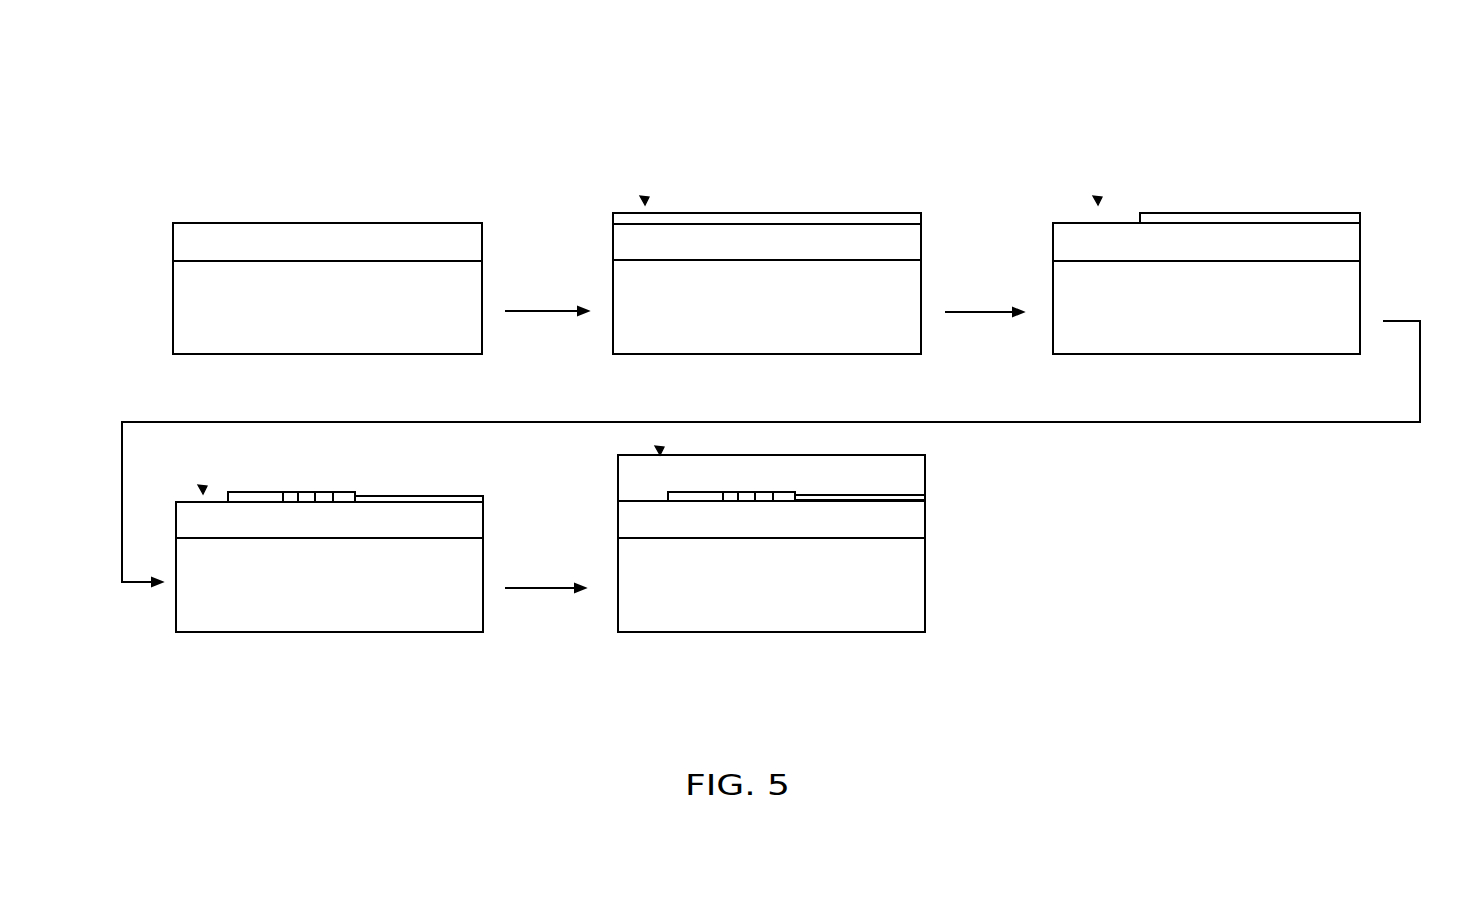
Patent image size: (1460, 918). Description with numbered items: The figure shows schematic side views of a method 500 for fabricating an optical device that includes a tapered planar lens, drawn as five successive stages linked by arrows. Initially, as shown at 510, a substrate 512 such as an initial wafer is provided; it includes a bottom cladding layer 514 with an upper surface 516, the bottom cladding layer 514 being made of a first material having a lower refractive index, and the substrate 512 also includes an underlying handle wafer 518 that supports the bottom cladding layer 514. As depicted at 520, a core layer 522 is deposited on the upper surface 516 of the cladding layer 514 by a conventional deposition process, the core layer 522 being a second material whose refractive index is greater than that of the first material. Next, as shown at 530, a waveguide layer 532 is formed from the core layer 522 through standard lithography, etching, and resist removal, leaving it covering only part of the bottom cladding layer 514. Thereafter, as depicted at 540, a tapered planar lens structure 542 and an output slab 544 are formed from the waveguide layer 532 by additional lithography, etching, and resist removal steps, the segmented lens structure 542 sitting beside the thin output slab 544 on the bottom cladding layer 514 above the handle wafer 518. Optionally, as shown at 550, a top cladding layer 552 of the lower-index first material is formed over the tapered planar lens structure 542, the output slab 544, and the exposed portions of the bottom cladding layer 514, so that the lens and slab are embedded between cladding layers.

The method 500 is at (705, 118).
The initial step 510 is at (203, 202).
The substrate 512 is at (163, 225).
The bottom cladding layer 514 is at (473, 242).
The upper surface 516 is at (400, 222).
The handle wafer 518 is at (473, 342).
The core layer deposition step 520 is at (646, 202).
The core layer 522 is at (797, 212).
The waveguide layer forming step 530 is at (1098, 202).
The waveguide layer 532 is at (1257, 212).
The lens and slab forming step 540 is at (203, 490).
The tapered planar lens structure 542 is at (302, 491).
The output slab 544 is at (428, 496).
The top cladding step 550 is at (659, 451).
The top cladding layer 552 is at (915, 460).